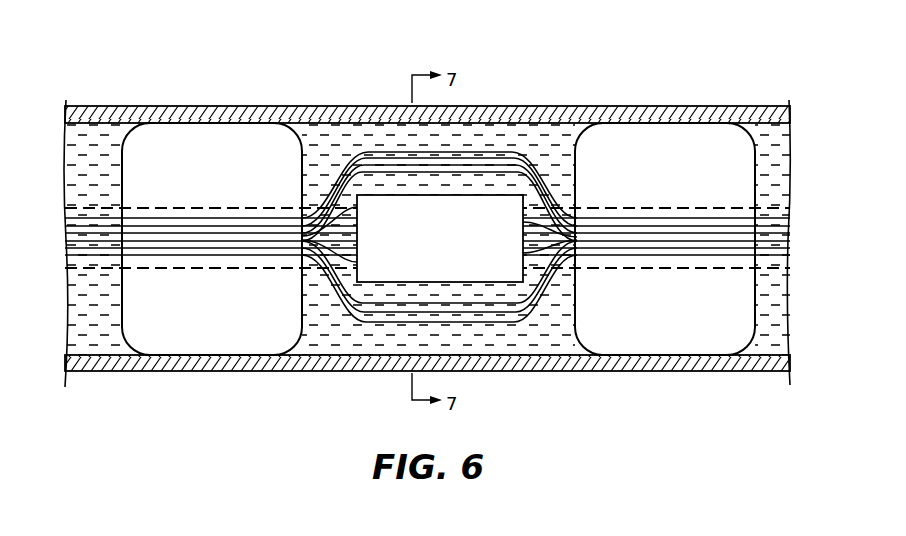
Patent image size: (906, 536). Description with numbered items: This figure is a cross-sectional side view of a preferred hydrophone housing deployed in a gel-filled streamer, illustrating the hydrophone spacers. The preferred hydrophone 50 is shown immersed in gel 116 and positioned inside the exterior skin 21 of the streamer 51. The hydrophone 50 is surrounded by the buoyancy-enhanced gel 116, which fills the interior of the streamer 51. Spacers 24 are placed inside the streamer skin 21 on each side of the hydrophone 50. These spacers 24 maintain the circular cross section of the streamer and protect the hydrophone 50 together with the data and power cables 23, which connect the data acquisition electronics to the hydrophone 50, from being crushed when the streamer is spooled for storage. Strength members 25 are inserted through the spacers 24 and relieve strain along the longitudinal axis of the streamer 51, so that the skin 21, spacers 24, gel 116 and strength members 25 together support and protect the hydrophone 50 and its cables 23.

The streamer 51 is at (128, 54).
The exterior skin 21 is at (323, 105).
The spacers 24 is at (235, 175).
The strength members 25 is at (186, 196).
The hydrophone 50 is at (475, 185).
The data and power cables 23 is at (529, 156).
The gel 116 is at (323, 326).